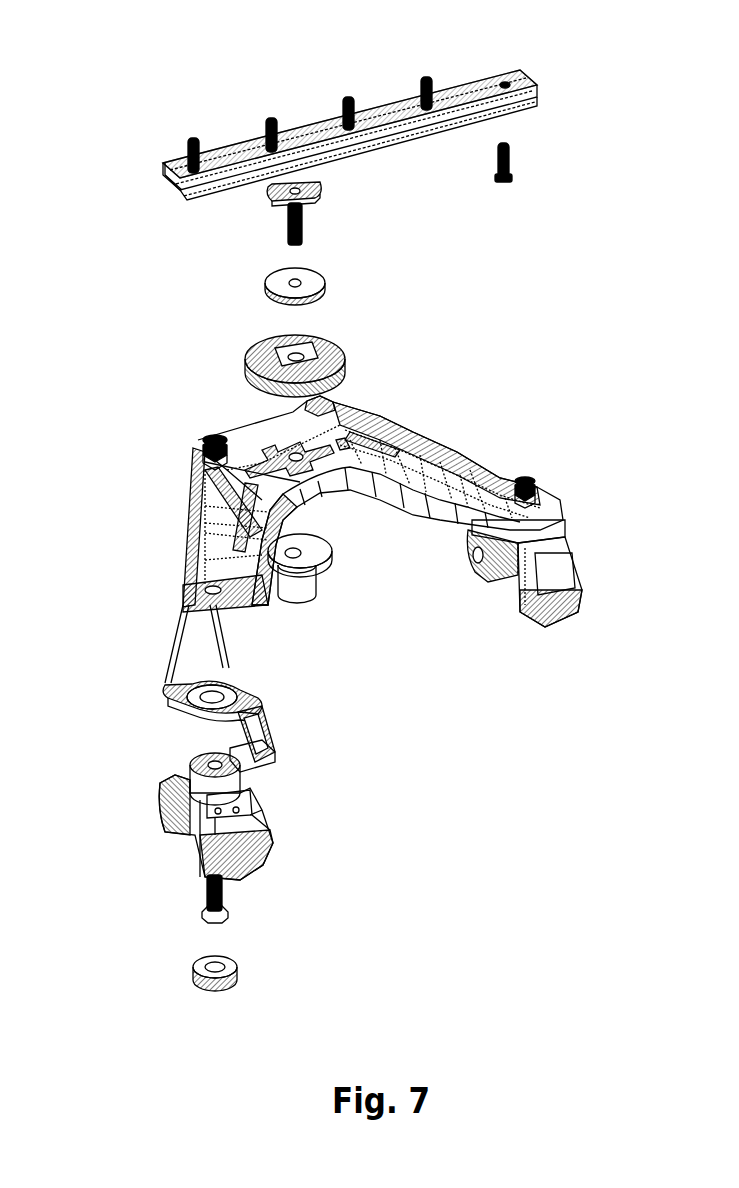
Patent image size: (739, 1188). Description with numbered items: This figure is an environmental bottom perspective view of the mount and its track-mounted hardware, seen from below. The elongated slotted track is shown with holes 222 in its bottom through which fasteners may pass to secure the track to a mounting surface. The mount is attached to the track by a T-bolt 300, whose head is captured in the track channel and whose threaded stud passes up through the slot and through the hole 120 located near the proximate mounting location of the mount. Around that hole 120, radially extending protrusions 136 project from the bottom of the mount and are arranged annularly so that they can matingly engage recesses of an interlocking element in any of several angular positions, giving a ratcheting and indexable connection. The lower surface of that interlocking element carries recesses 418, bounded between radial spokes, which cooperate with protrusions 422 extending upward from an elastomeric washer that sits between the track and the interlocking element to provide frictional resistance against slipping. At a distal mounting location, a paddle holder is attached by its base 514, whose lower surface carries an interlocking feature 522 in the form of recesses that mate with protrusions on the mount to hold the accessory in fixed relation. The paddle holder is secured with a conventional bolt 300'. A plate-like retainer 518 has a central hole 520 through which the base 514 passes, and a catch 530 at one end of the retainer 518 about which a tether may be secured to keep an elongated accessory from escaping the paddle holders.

The holes 222 is at (507, 82).
The T-bolt 300 is at (343, 213).
The protrusions 422 is at (284, 300).
The recesses 418 is at (313, 345).
The hole 120 is at (280, 440).
The protrusions 136 is at (332, 410).
The hole 520 is at (208, 693).
The retainer 518 is at (168, 700).
The interlocking feature or surface 522 is at (256, 702).
The catch 530 is at (270, 745).
The base 514 is at (196, 760).
The conventional bolt 300' is at (271, 933).